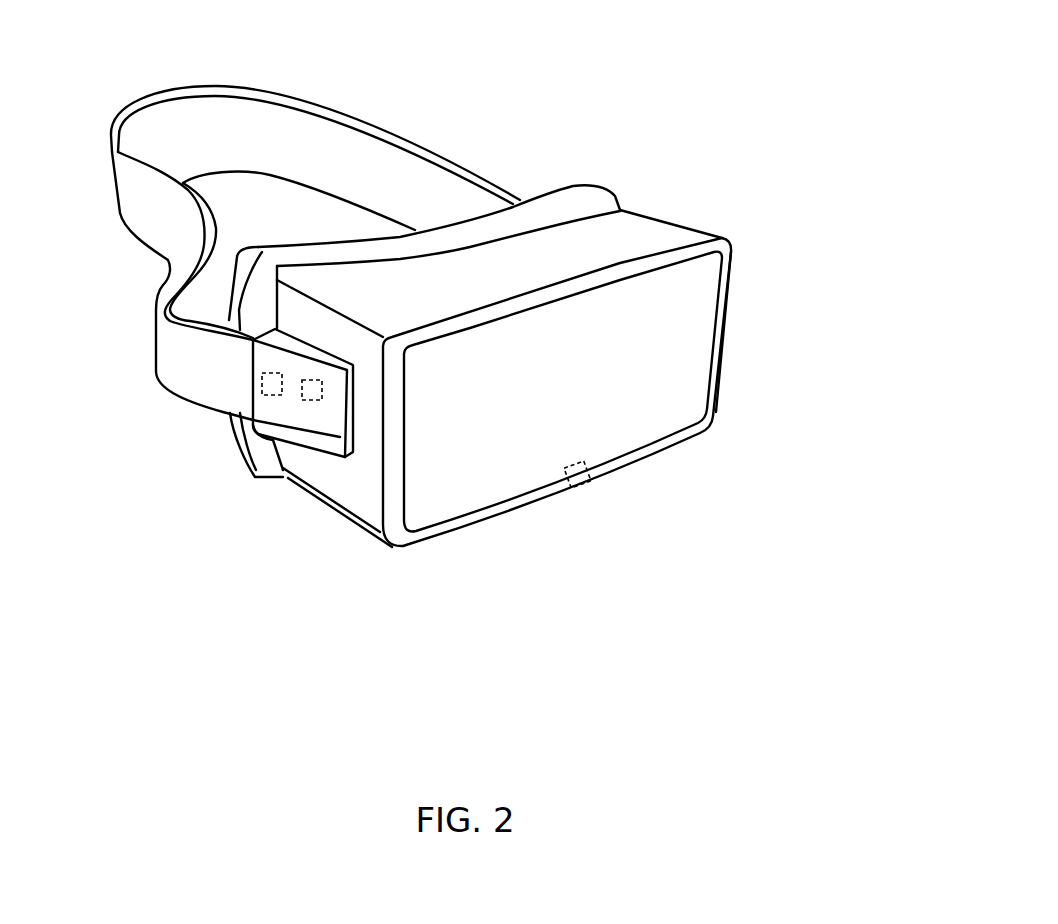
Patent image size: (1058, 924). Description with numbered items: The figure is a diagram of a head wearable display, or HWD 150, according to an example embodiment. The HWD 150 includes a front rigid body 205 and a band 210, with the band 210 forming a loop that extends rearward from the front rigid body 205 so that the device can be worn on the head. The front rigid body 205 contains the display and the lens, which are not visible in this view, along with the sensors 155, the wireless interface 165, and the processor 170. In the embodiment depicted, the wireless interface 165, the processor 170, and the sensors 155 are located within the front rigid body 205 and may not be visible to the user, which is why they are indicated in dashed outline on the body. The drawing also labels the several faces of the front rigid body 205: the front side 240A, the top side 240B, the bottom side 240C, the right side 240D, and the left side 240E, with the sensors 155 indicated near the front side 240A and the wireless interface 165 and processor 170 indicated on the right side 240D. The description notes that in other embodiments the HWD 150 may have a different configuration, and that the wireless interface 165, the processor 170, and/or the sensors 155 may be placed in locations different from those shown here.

The HWD 150 is at (77, 27).
The front rigid body 205 is at (723, 237).
The band 210 is at (423, 150).
The front side 240A is at (649, 430).
The top side 240B is at (333, 284).
The bottom side 240C is at (304, 527).
The right side 240D is at (352, 499).
The left side 240E is at (706, 212).
The sensors 155 is at (581, 498).
The wireless interface 165 is at (240, 380).
The processor 170 is at (284, 412).